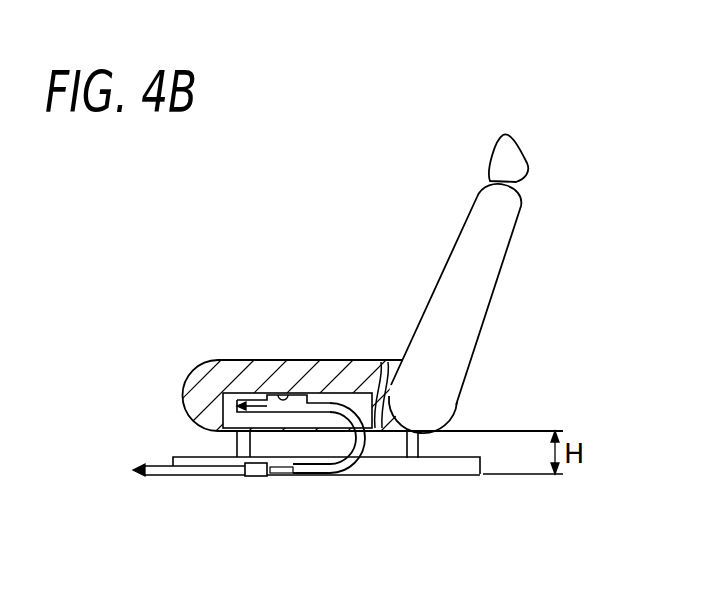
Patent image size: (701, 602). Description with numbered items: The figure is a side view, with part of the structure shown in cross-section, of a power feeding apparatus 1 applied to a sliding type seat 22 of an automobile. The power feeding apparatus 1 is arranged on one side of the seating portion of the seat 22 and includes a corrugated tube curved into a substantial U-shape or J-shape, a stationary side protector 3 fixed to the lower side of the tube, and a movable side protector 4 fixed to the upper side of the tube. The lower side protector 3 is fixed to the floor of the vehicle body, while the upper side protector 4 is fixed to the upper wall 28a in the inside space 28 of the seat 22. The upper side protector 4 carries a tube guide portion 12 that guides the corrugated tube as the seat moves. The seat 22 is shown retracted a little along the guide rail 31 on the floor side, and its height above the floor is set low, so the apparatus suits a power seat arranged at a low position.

The power feeding apparatus 1 is at (324, 496).
The stationary side protector 3 is at (252, 477).
The movable side protector 4 is at (235, 381).
The tube guide portion 12 is at (322, 392).
The sliding type seat 22 is at (520, 316).
The inside space 28 is at (380, 360).
The upper wall 28a is at (287, 393).
The guide rail 31 is at (438, 468).